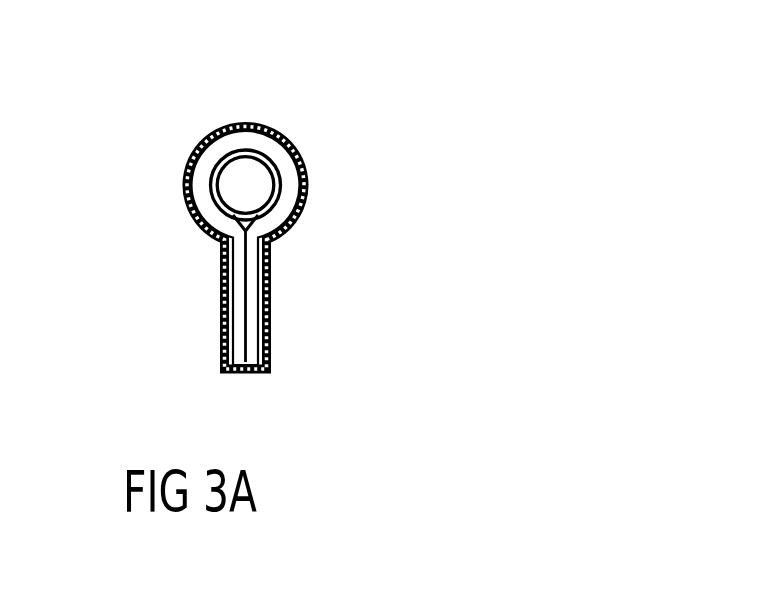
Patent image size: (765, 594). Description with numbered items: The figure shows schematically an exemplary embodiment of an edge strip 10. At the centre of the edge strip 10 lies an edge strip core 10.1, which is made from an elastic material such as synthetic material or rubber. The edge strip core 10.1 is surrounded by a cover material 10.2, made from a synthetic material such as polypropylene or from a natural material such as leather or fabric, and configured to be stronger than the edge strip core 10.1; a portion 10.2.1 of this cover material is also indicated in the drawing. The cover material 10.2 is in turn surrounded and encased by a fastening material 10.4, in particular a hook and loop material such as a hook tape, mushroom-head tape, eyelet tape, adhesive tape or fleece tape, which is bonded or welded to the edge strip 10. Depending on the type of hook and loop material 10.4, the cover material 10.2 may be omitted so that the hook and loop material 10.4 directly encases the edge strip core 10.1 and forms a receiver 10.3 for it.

The edge strip 10 is at (302, 128).
The edge strip core 10.1 is at (228, 186).
The cover material 10.2 is at (283, 181).
The web portion of tubular wall 10.2.1 is at (237, 315).
The receiver 10.3 is at (275, 224).
The fastening material 10.4 is at (190, 200).